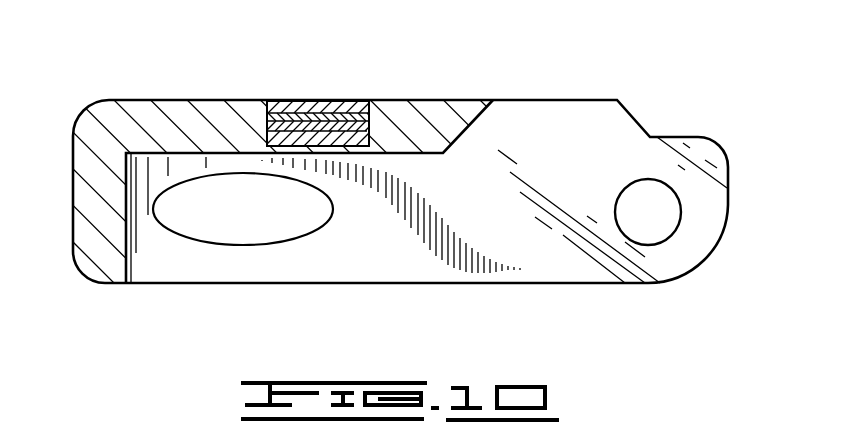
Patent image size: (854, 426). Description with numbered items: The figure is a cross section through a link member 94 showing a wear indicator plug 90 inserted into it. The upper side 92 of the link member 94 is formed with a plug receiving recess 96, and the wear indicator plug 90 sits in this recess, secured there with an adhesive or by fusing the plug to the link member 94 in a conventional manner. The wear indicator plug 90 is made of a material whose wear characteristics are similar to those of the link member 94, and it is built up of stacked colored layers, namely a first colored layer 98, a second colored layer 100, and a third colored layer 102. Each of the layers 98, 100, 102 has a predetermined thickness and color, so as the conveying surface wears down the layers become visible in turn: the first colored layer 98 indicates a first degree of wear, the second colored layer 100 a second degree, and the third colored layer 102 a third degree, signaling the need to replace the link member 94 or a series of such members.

The link member 94 is at (557, 62).
The upper side 92 is at (178, 100).
The wear indicator plug 90 is at (338, 100).
The plug receiving recess 96 is at (279, 100).
The first colored layer 98 is at (310, 100).
The second colored layer 100 is at (367, 123).
The third colored layer 102 is at (355, 138).